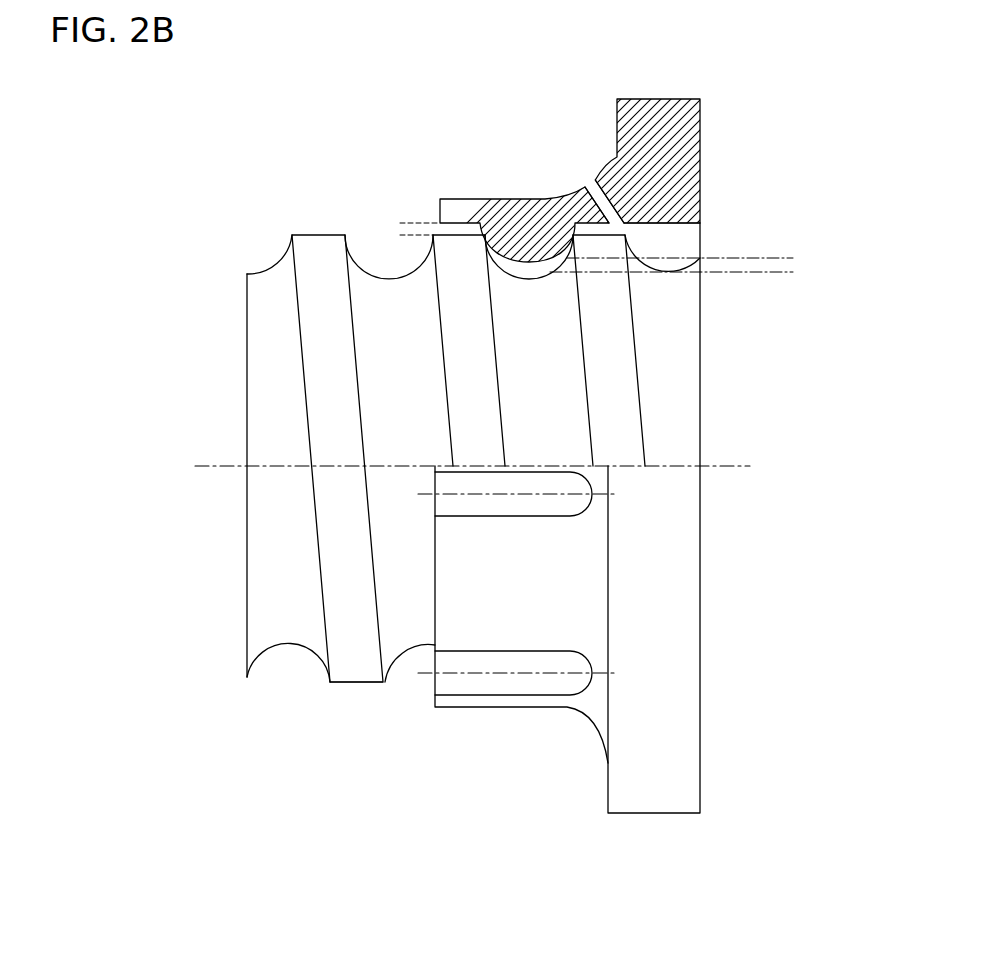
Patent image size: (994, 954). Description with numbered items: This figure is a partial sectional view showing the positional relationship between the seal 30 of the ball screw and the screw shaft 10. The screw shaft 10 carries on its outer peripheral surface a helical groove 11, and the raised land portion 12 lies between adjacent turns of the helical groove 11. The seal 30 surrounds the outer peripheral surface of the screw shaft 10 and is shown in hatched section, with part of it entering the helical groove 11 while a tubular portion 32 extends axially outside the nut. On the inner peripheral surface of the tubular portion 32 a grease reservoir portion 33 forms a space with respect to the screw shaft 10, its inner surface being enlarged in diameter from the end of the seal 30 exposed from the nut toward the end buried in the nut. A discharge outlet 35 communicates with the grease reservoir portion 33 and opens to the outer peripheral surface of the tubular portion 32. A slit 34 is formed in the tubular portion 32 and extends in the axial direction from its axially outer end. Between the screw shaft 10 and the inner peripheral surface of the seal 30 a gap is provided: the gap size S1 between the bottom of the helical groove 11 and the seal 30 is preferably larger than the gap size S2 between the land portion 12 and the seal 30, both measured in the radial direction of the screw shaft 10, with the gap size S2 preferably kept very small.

The screw shaft 10 is at (292, 695).
The helical groove 11 is at (303, 630).
The land portion 12 is at (320, 243).
The seal 30 is at (497, 120).
The tubular portion 32 is at (593, 737).
The grease reservoir portion 33 is at (607, 172).
The slit 34 is at (548, 503).
The discharge outlet 35 is at (662, 247).
The gap size S1 is at (802, 258).
The gap size S2 is at (405, 223).